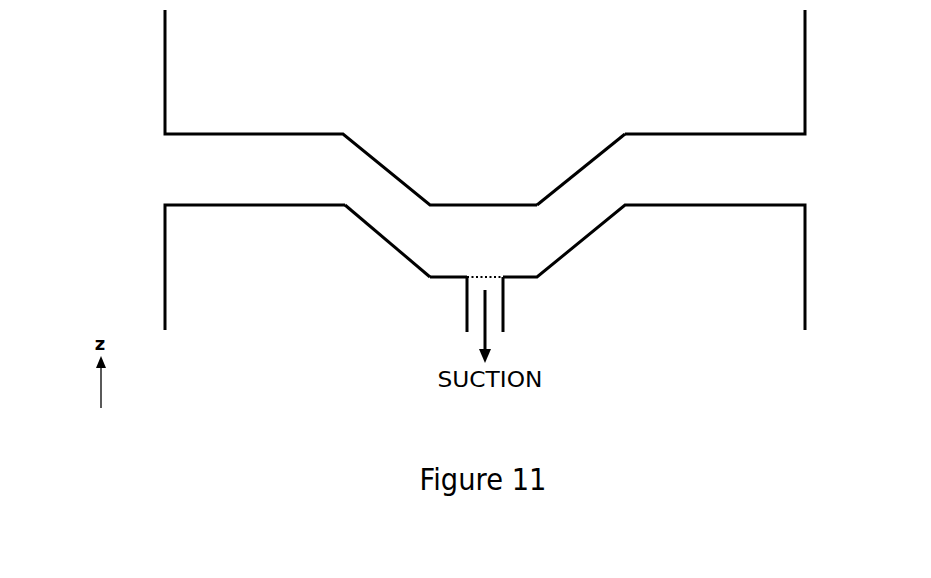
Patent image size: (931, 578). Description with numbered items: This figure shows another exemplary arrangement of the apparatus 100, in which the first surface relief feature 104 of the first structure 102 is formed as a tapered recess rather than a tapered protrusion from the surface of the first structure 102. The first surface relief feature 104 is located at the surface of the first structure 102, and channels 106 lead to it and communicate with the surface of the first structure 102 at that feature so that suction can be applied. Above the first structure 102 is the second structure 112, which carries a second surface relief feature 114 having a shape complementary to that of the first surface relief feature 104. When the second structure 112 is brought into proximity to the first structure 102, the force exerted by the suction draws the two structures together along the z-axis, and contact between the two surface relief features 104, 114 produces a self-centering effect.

The apparatus 100 is at (431, 181).
The first structure 102 is at (485, 284).
The first surface relief feature 104 is at (358, 222).
The channels 106 is at (467, 312).
The second structure 112 is at (431, 107).
The second surface relief feature 114 is at (608, 147).